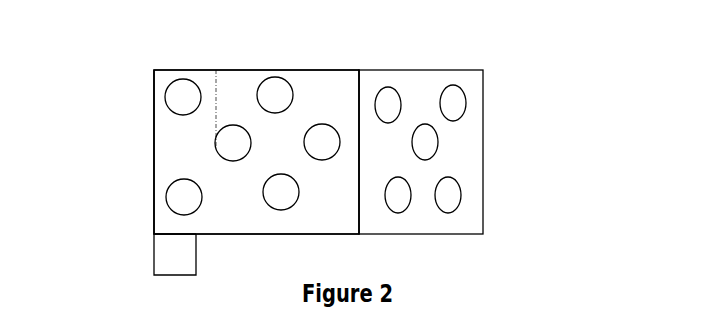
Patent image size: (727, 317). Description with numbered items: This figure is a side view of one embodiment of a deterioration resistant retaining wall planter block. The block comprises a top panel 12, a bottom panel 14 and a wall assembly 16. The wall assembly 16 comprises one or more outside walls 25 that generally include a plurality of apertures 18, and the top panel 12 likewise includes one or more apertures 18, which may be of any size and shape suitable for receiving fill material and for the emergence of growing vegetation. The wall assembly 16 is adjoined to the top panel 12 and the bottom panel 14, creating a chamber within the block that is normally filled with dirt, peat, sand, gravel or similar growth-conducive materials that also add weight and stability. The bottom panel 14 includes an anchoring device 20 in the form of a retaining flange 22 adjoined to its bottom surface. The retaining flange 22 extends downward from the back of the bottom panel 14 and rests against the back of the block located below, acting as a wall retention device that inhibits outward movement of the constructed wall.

The top panel 12 is at (302, 70).
The bottom panel 14 is at (395, 235).
The wall assembly 16 is at (198, 158).
The apertures 18 is at (275, 95).
The anchoring device 20 is at (165, 268).
The retaining flange 22 is at (167, 242).
The outside walls 25 is at (154, 97).